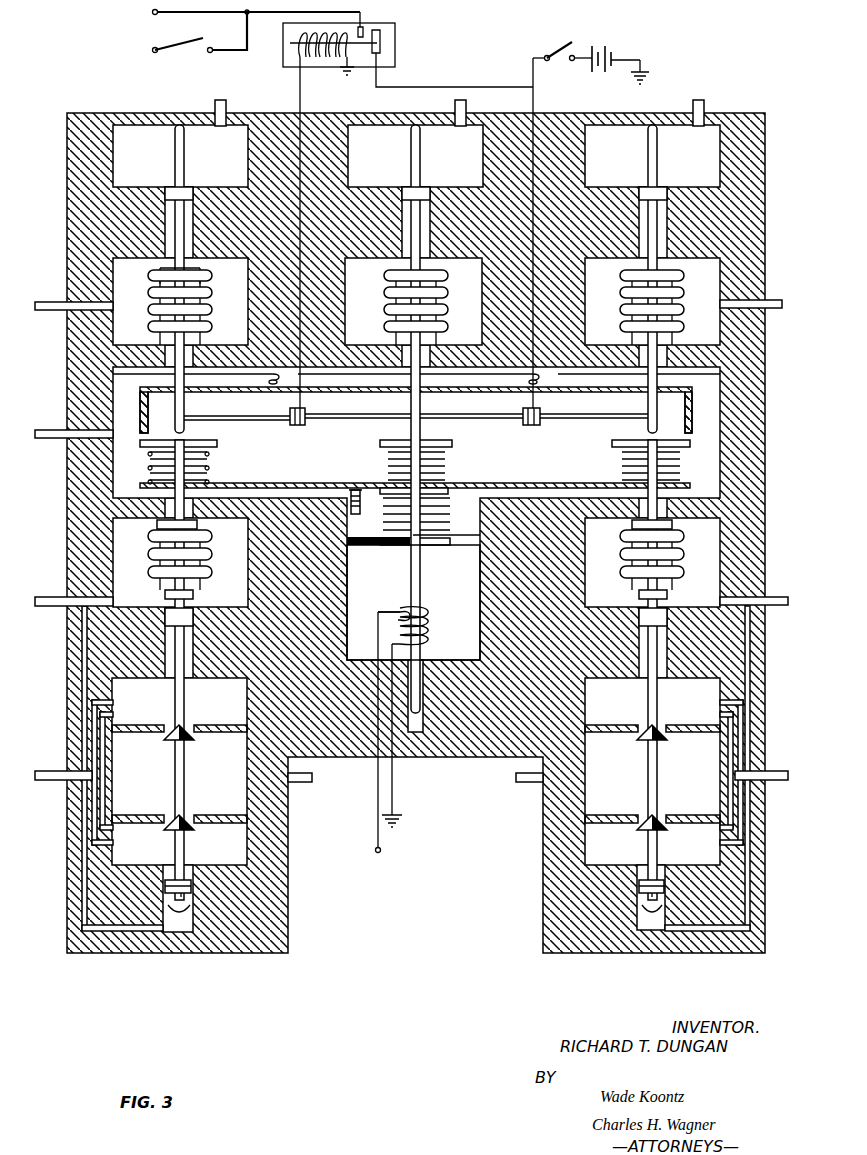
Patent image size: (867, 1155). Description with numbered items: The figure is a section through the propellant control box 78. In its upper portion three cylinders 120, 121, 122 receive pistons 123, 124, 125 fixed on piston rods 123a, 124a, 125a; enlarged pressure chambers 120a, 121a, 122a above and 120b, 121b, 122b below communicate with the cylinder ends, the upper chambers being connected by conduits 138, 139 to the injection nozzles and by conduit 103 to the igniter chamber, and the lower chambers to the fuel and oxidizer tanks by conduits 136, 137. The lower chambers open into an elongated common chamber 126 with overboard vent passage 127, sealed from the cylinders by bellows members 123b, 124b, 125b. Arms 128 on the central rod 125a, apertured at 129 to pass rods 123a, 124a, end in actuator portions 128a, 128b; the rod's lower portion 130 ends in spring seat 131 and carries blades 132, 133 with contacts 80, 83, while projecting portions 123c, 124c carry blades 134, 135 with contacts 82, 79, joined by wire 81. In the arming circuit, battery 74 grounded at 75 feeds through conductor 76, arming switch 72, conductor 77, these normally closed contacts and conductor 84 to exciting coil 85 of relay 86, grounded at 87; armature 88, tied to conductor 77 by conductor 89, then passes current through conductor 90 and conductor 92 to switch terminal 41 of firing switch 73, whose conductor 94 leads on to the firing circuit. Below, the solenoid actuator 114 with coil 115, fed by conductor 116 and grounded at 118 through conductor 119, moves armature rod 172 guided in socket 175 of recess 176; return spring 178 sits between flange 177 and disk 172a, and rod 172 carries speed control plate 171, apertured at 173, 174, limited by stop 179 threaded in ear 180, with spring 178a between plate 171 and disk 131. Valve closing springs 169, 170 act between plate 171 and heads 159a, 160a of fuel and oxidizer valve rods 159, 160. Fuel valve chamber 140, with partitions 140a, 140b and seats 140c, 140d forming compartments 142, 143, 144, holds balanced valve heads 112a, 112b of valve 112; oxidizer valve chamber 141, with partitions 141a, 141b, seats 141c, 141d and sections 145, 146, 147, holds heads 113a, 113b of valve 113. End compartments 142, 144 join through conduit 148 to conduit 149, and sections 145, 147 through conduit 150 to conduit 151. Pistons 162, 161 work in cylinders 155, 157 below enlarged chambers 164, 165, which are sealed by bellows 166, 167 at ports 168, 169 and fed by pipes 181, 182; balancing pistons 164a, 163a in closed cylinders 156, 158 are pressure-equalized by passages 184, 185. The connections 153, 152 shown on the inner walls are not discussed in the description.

The propellant control box 78 is at (758, 60).
The arm circuit relay 86 is at (405, 26).
The exciting coil 85 is at (300, 40).
The conductor 90 is at (363, 25).
The switch contact armature 88 is at (382, 44).
The ground 87 is at (346, 78).
The conductor 89 is at (470, 87).
The conductor 84 is at (300, 93).
The firing switch 73 is at (198, 46).
The conductor 94 is at (158, 52).
The switch contact 41 is at (209, 51).
The conductor 92 is at (239, 50).
The arming switch 72 is at (562, 50).
The conductor 76 is at (574, 61).
The battery 74 is at (608, 50).
The ground 75 is at (650, 72).
The conductor 77 is at (536, 104).
The conduit 138 is at (215, 107).
The conduit 103 is at (455, 107).
The conduit 139 is at (704, 107).
The upper enlarged pressure chamber 120a is at (224, 134).
The upper enlarged pressure chamber 122a is at (466, 134).
The upper enlarged pressure chamber 121a is at (612, 136).
The piston member 123 is at (186, 195).
The piston member 125 is at (423, 195).
The piston member 124 is at (660, 195).
The fuel chamber pressure cylinder 120 is at (162, 269).
The igniter chamber pressure cylinder 122 is at (394, 269).
The oxidizer chamber pressure cylinder 121 is at (630, 269).
The lower enlarged pressure chamber 120b is at (231, 280).
The lower enlarged pressure chamber 122b is at (361, 294).
The lower enlarged pressure chamber 121b is at (701, 294).
The piston rod 123a is at (163, 324).
The sealing bellows member 123b is at (160, 295).
The central piston rod 125a is at (432, 344).
The sealing bellows member 125b is at (394, 322).
The piston rod 124a is at (634, 327).
The sealing bellows member 124b is at (632, 296).
The conduit 136 is at (60, 301).
The conduit 137 is at (764, 295).
The overboard vent passage 127 is at (68, 438).
The elongated common chamber 126 is at (113, 378).
The apertures 129 is at (172, 376).
The actuator arms 128 is at (501, 389).
The actuator end portion 128a is at (140, 410).
The actuator end portion 128b is at (692, 410).
The projecting portion 123c is at (187, 409).
The projecting portion 124c is at (648, 408).
The resilient contact blade 134 is at (233, 417).
The contact supporting blade 133 is at (396, 416).
The contact supporting blade 132 is at (461, 416).
The resilient contact blade 135 is at (596, 421).
The contact terminal 83 is at (305, 413).
The contact 82 is at (306, 423).
The contact terminal 80 is at (541, 414).
The contact 79 is at (528, 426).
The flexible electrical conductor 81 is at (380, 444).
The lower portion of central rod 130 is at (424, 428).
The disk shaped spring seat 131 is at (448, 445).
The disk shaped head 160a is at (218, 444).
The disk shaped head 159a is at (612, 444).
The valve closing spring 170 is at (150, 466).
The aperture 174 is at (210, 466).
The valve closing spring 169 is at (620, 466).
The speed control plate 171 is at (304, 482).
The ear 180 is at (326, 472).
The coil spring 178a is at (390, 472).
The disk 172a is at (450, 463).
The aperture 173 is at (670, 488).
The adjustable stop member 179 is at (354, 514).
The return spring 178 is at (450, 520).
The spring seat flange 177 is at (380, 545).
The central recess 176 is at (347, 576).
The armature rod 172 is at (422, 561).
The solenoid actuator device 114 is at (431, 589).
The solenoid coil 115 is at (402, 606).
The conductor 116 is at (377, 770).
The conductor 119 is at (394, 795).
The ground 118 is at (403, 819).
The guide socket 175 is at (417, 733).
The enlarged cylindrical chamber 165 is at (113, 548).
The enlarged cylindrical chamber 164 is at (705, 570).
The bellows member 167 is at (207, 550).
The bellows member 166 is at (652, 552).
The restricted port 168 is at (634, 526).
The piston 161 is at (170, 606).
The oxidizer valve rod 160 is at (190, 597).
The piston 162 is at (643, 606).
The fuel valve rod 159 is at (660, 597).
The pressure supply pipe 182 is at (58, 597).
The pressure supply pipe 181 is at (768, 597).
The communicating passage 185 is at (82, 898).
The communicating passage 184 is at (750, 842).
The reduced cylinder portion 157 is at (168, 680).
The end section 145 is at (179, 771).
The partition 141a is at (166, 724).
The oxidizer valve chamber 141 is at (215, 765).
The valve seat 141c is at (170, 742).
The valve seat 141d is at (170, 800).
The partition 141b is at (121, 828).
The oxidizer main control valve 113 is at (185, 790).
The valve head 113a is at (192, 738).
The valve head 113b is at (192, 820).
The reduced cylinder portion 158 is at (170, 866).
The conduit 151 is at (52, 771).
The middle section 146 is at (92, 780).
The communicating conduit 150 is at (100, 826).
The end section 147 is at (105, 845).
The port 153 is at (297, 782).
The port 152 is at (529, 782).
The balancing piston 163a is at (184, 903).
The balancing piston 164a is at (652, 903).
The reduced cylinder portion 155 is at (640, 680).
The end compartment 142 is at (700, 700).
The valve seat 140c is at (647, 725).
The partition 140a is at (688, 709).
The fuel valve chamber 140 is at (675, 762).
The partition 140b is at (680, 802).
The valve seat 140d is at (642, 813).
The fuel main control valve 112 is at (658, 788).
The valve head 112a is at (645, 740).
The valve head 112b is at (645, 822).
The reduced cylinder portion 156 is at (638, 865).
The middle compartment 143 is at (740, 750).
The communicating conduit 148 is at (733, 762).
The conduit 149 is at (768, 766).
The end compartment 144 is at (700, 832).